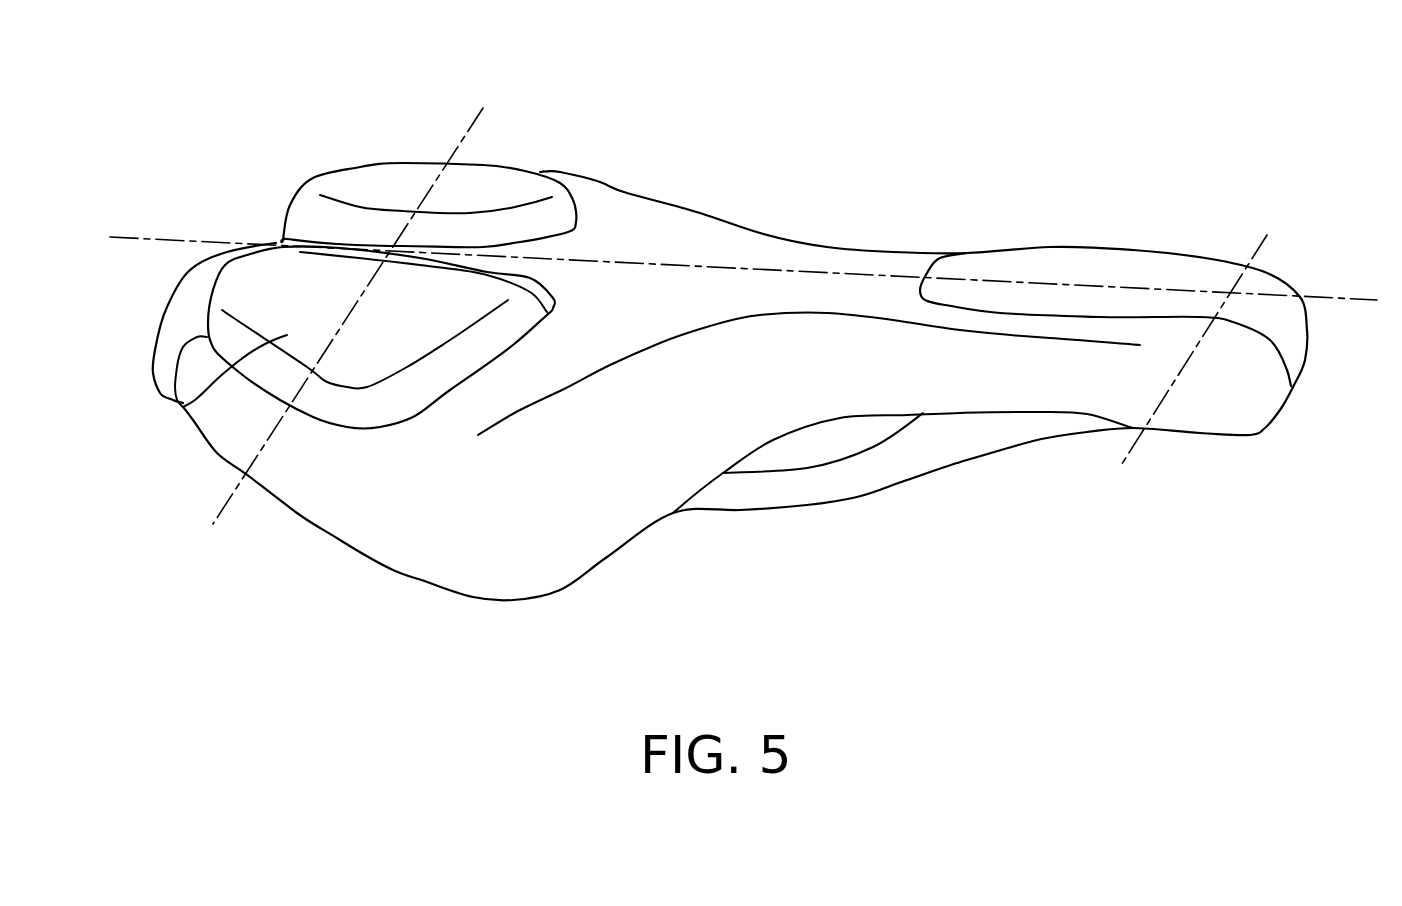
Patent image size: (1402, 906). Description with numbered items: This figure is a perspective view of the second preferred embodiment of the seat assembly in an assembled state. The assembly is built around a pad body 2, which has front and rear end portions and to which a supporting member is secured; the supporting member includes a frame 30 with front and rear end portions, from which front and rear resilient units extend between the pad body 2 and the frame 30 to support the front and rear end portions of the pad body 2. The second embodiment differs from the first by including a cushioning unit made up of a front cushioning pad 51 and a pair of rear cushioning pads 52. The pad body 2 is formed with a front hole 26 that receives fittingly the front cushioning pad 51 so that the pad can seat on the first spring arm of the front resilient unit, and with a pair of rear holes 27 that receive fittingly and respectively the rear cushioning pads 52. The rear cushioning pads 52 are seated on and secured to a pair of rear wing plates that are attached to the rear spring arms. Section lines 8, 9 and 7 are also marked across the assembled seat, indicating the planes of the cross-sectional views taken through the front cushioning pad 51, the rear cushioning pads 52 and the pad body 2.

The pad body 2 is at (702, 200).
The rear holes 27 is at (563, 193).
The rear cushioning pads 52 is at (400, 183).
The front cushioning pad 51 is at (1113, 257).
The front hole 26 is at (1105, 315).
The frame 30 is at (855, 528).
The section line 8- 8 is at (108, 239).
The section line 9- 9 is at (484, 109).
The section line 7- 7 is at (1267, 235).